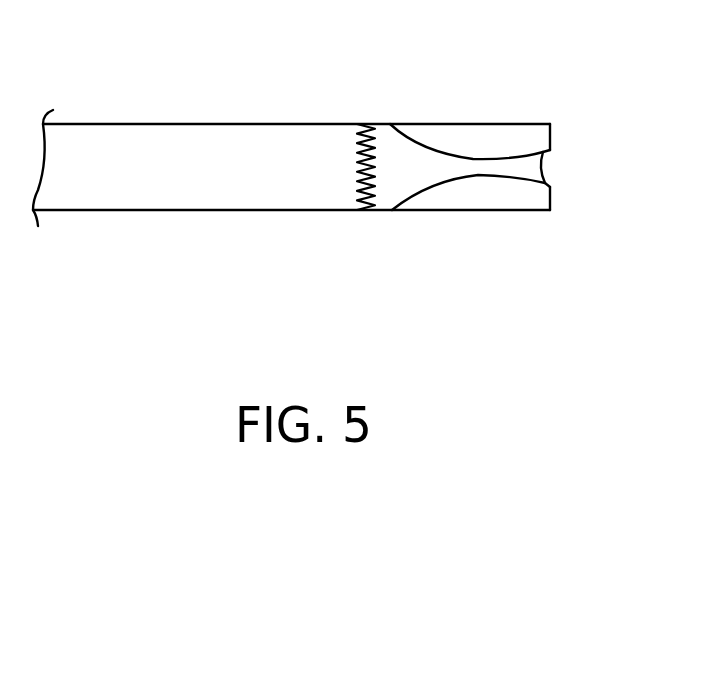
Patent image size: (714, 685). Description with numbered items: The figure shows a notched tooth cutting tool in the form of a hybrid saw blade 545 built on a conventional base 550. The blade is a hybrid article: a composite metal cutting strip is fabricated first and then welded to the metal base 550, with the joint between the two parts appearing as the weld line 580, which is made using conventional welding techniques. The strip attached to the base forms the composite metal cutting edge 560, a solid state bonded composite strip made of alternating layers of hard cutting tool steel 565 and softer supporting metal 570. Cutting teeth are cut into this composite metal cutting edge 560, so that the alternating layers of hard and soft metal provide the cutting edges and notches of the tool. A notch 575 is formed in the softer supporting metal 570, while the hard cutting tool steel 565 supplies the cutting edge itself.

The hybrid saw blade 545 is at (203, 41).
The base 550 is at (145, 180).
The composite metal cutting edge 560 is at (392, 126).
The hard cutting tool steel 565 is at (523, 124).
The softer supporting metal 570 is at (497, 168).
The notch 575 is at (548, 162).
The weld line 580 is at (366, 212).